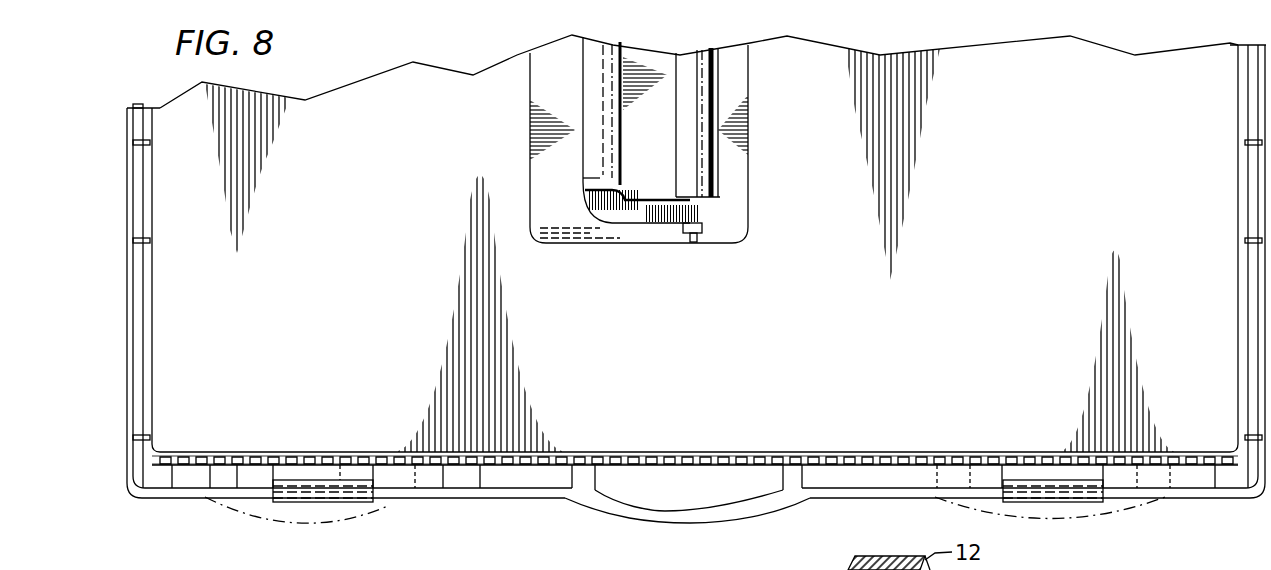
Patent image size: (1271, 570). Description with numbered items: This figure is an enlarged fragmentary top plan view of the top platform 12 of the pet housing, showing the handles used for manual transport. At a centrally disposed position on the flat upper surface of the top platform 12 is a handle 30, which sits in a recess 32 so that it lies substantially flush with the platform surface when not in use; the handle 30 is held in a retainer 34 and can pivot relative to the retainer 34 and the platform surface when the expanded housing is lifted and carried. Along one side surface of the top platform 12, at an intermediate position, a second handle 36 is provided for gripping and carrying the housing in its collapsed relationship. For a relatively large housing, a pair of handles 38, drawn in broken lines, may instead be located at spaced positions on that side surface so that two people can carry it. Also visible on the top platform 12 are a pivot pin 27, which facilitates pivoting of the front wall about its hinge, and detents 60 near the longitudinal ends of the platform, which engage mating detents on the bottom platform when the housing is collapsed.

The top platform 12 is at (696, 266).
The pivot pin 27 is at (403, 456).
The handle 30 is at (597, 177).
The recess 32 is at (533, 148).
The retainer 34 is at (700, 165).
The handle 36 is at (657, 512).
The handles 38 is at (290, 517).
The detents 60 is at (333, 498).